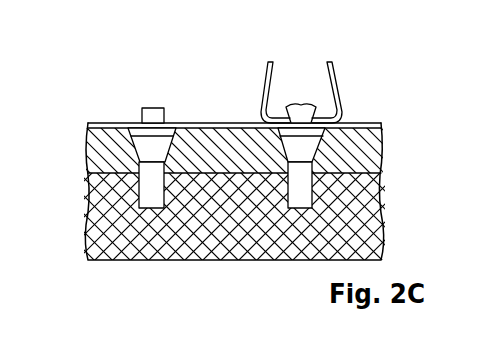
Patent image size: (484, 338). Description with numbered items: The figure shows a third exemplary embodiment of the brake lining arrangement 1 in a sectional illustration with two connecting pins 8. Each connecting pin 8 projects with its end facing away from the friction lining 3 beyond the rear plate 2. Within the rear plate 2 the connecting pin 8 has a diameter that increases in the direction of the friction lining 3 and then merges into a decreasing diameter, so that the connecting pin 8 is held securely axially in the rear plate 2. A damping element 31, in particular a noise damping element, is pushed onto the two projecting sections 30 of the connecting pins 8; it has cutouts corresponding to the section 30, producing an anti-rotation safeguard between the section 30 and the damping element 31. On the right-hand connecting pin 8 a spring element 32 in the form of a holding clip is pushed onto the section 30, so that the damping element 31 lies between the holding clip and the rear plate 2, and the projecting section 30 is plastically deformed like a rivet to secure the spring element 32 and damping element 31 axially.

The brake lining arrangement 1 is at (98, 68).
The rear plate 2 is at (357, 148).
The friction lining 3 is at (360, 206).
The connecting pin 8 is at (147, 153).
The projecting section 30 is at (146, 114).
The damping element 31 is at (171, 123).
The spring element 32 is at (338, 78).